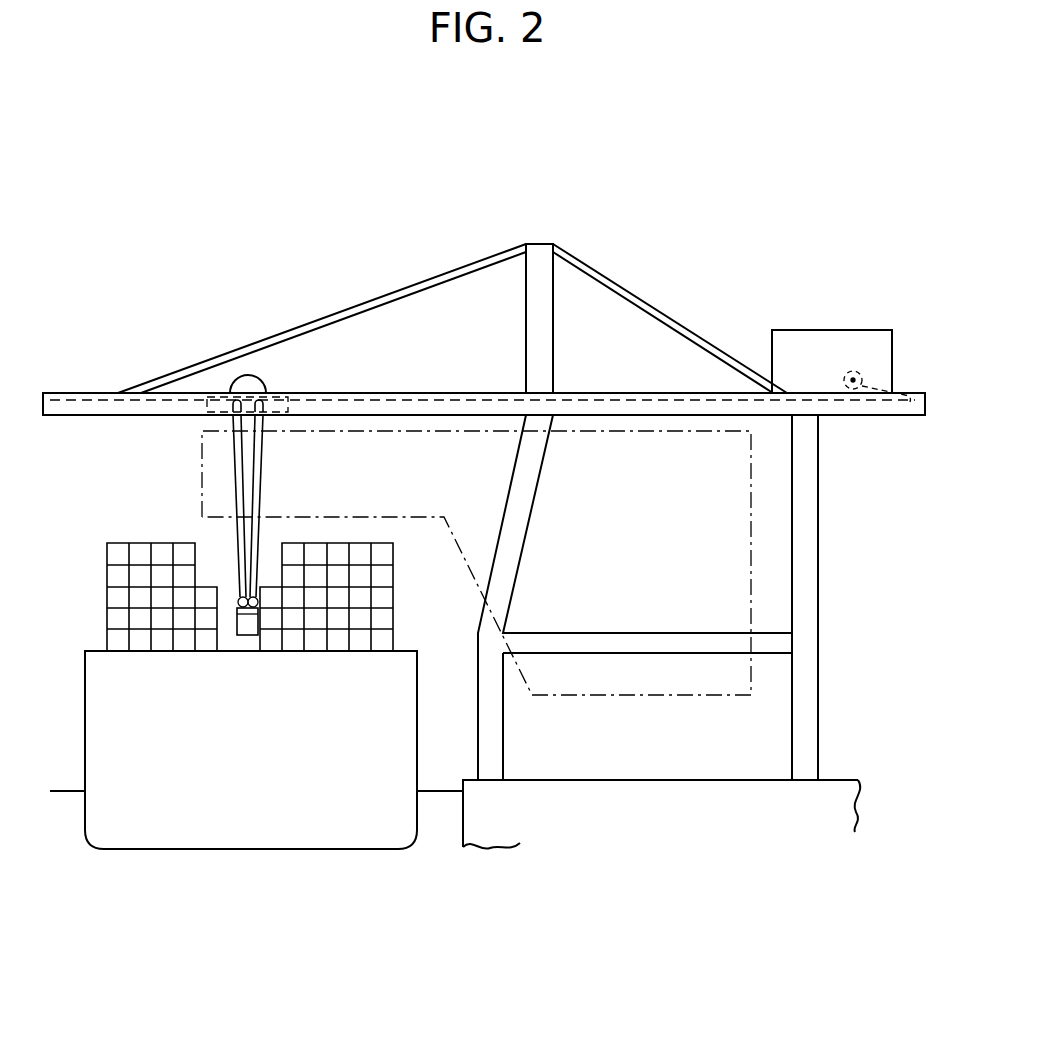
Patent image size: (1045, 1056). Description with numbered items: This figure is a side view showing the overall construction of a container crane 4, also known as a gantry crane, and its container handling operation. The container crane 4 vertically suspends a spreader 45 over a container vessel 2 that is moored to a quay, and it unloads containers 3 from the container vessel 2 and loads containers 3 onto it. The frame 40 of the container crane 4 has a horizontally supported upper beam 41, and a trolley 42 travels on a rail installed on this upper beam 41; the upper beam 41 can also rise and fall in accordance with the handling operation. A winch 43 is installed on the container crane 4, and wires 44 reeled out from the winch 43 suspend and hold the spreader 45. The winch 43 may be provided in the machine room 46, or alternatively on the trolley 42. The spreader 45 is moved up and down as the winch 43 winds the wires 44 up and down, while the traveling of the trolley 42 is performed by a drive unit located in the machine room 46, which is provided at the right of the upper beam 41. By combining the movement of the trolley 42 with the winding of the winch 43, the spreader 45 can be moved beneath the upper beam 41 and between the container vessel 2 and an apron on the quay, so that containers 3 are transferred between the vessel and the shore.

The container vessel 2 is at (263, 851).
The containers 3 is at (112, 553).
The container crane 4 is at (826, 516).
The frame 40 is at (540, 296).
The upper beam 41 is at (66, 403).
The trolley 42 is at (210, 392).
The winch 43 is at (263, 377).
The wires 44 is at (453, 384).
The spreader 45 is at (235, 607).
The machine room 46 is at (822, 330).